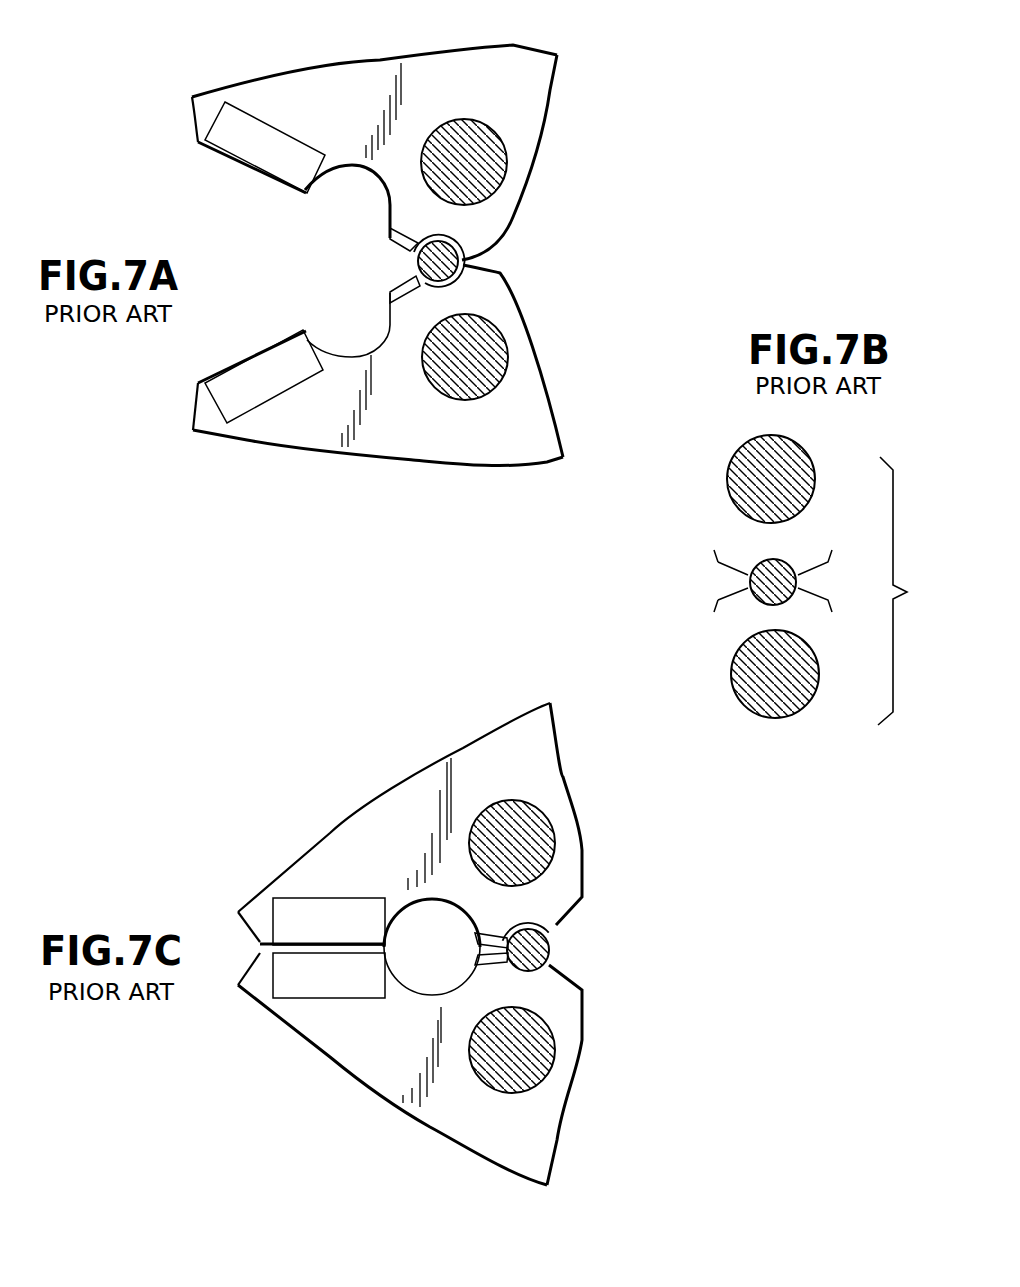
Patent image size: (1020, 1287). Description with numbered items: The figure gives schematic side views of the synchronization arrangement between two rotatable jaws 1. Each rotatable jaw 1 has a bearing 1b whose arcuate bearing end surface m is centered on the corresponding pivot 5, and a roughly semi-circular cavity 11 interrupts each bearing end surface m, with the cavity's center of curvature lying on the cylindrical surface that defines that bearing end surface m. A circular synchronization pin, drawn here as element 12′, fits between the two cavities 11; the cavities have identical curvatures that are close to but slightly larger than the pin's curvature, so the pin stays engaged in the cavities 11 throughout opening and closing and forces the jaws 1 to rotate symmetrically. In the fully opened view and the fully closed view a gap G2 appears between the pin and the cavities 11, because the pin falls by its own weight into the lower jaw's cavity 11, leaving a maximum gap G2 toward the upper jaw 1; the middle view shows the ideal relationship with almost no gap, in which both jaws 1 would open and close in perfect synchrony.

In FIG. 7A, the rotatable jaw 1 is at (291, 78).
In FIG. 7C, the rotatable jaw 1 is at (336, 840).
In FIG. 7A, the bearing 1b is at (524, 186).
In FIG. 7B, the bearing 1b is at (828, 560).
In FIG. 7C, the bearing 1b is at (574, 822).
In FIG. 7A, the pivot 5 is at (500, 155).
In FIG. 7B, the pivot 5 is at (785, 445).
In FIG. 7C, the pivot 5 is at (540, 815).
In FIG. 7A, the semi-circular cavity 11 is at (415, 240).
In FIG. 7B, the semi-circular cavity 11 is at (780, 567).
In FIG. 7C, the semi-circular cavity 11 is at (498, 934).
In FIG. 7A, the lead wire 12′ is at (464, 266).
In FIG. 7B, the lead wire 12′ is at (750, 582).
In FIG. 7C, the lead wire 12′ is at (547, 950).
In FIG. 7A, the bearing end surface m is at (388, 239).
In FIG. 7C, the bearing end surface m is at (560, 925).
In FIG. 7A, the gap G2 is at (413, 254).
In FIG. 7C, the gap G2 is at (560, 915).